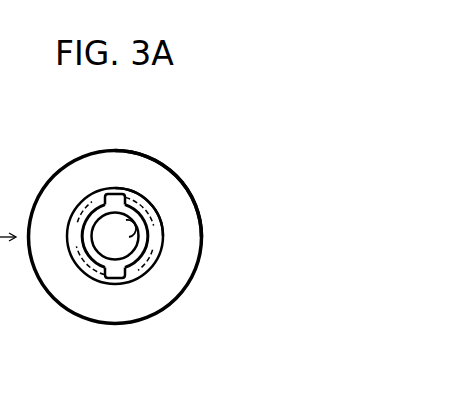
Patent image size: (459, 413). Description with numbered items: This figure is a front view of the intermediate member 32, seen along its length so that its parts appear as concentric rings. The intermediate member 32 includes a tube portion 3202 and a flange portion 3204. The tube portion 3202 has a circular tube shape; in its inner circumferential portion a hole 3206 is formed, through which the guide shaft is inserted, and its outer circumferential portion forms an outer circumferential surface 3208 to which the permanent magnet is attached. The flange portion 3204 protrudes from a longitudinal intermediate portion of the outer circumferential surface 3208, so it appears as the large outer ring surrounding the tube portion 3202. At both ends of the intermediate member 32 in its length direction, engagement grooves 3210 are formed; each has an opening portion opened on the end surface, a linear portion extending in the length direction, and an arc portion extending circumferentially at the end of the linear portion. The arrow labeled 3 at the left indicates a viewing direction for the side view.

The intermediate member 32 is at (164, 139).
The tube portion 3202 is at (173, 247).
The flange portion 3204 is at (185, 295).
The hole 3206 is at (141, 236).
The outer circumferential surface 3208 is at (201, 235).
The engagement grooves 3210 is at (82, 207).
The direction arrow 3 is at (8, 250).